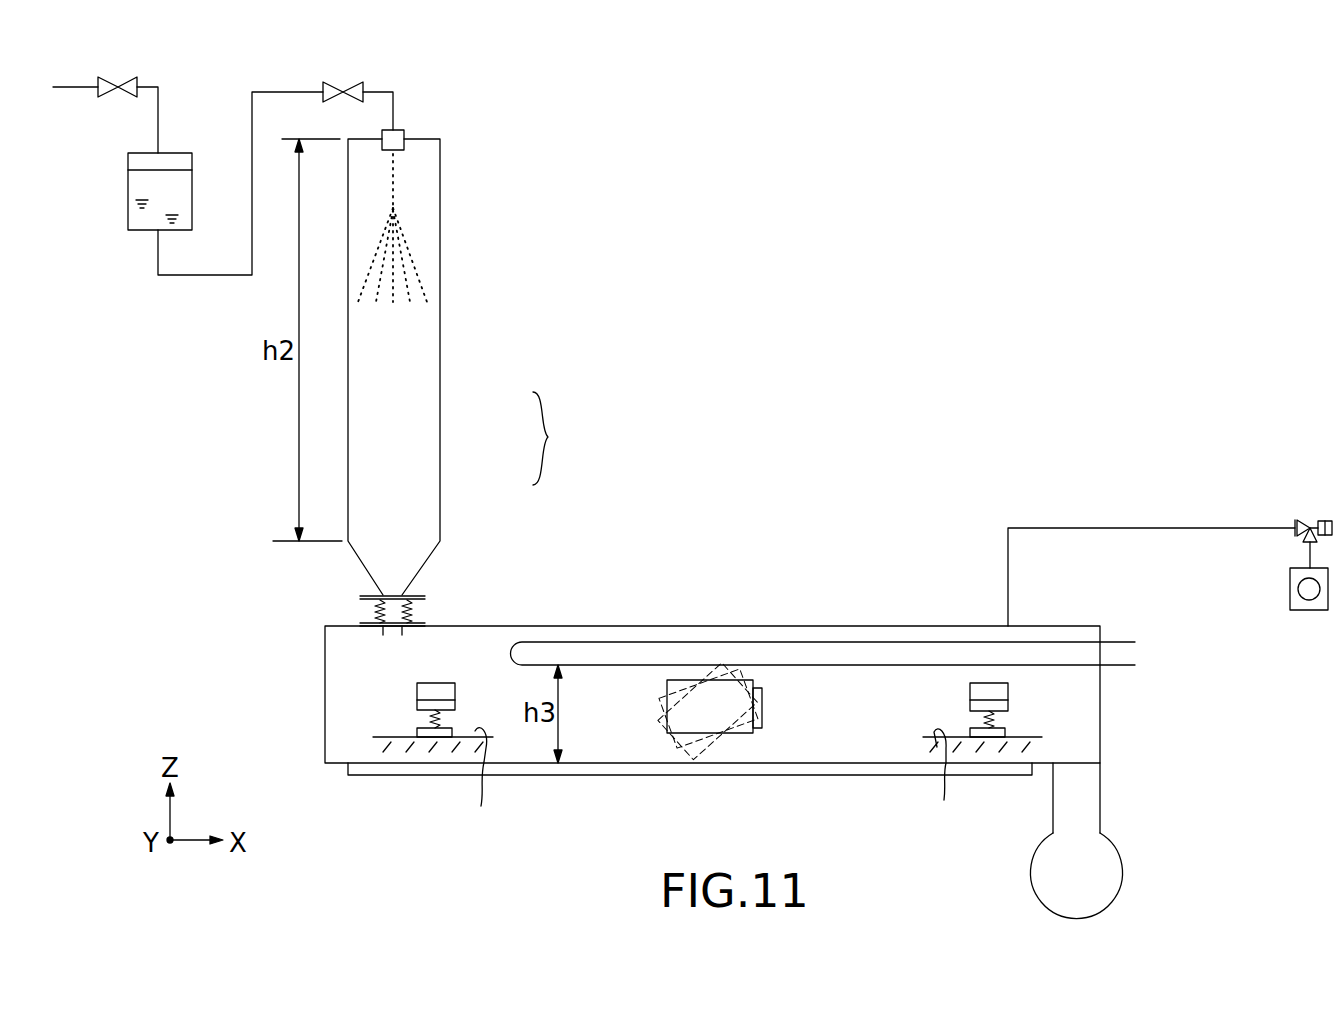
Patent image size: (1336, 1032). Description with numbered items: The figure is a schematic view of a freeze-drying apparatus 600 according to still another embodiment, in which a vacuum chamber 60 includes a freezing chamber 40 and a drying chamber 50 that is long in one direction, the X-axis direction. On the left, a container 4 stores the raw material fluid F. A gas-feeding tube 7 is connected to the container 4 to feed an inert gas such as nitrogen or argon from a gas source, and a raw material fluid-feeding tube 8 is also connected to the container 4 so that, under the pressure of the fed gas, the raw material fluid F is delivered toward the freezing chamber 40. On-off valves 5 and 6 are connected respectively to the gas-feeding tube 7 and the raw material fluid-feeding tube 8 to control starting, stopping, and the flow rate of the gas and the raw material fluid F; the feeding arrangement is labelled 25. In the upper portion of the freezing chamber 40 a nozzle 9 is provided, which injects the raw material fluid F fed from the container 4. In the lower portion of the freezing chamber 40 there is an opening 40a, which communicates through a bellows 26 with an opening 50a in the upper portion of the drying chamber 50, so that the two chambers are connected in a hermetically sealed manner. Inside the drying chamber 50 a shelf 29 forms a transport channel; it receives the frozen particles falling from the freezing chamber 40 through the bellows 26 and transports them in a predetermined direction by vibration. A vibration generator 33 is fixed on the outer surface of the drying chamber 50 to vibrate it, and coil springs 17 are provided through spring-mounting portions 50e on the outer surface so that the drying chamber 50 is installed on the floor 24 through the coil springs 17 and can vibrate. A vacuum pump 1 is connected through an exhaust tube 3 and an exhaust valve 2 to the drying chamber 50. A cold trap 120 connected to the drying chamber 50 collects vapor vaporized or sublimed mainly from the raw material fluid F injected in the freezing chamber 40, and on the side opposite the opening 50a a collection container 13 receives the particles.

The vacuum pump 1 is at (1295, 610).
The exhaust valve 2 is at (1303, 518).
The exhaust tube 3 is at (1122, 527).
The container 4 is at (128, 158).
The on-off valve 5 is at (108, 79).
The on-off valve 6 is at (334, 84).
The gas-feeding tube 7 is at (152, 86).
The raw material fluid-feeding tube 8 is at (213, 277).
The nozzle 9 is at (404, 133).
The collection container 13 is at (1123, 870).
The coil springs 17 is at (415, 715).
The floor 24 is at (718, 778).
The supply unit 25 is at (407, 90).
The bellows 26 is at (377, 612).
The shelf 29 is at (613, 762).
The vibration generators 33 is at (685, 735).
The freezing chamber 40 is at (452, 412).
The opening 40a is at (392, 592).
The drying chamber 50 is at (518, 612).
The opening 50a is at (396, 633).
The spring-mounting portions 50e is at (417, 690).
The vacuum chamber 60 is at (561, 438).
The cold trap 120 is at (1122, 628).
The freeze-drying apparatus 600 is at (860, 178).
The raw material fluid F is at (144, 193).